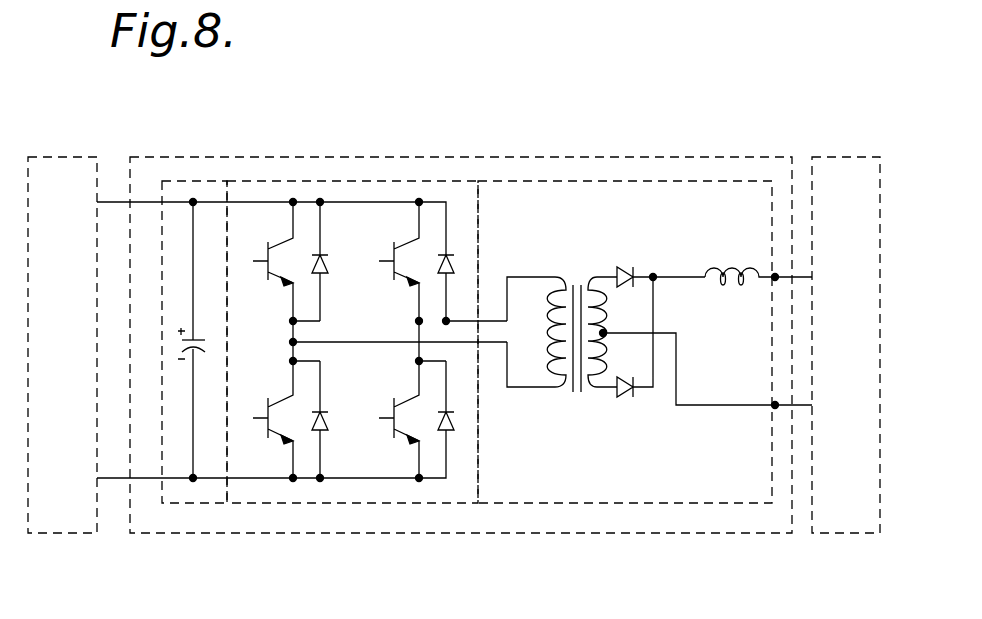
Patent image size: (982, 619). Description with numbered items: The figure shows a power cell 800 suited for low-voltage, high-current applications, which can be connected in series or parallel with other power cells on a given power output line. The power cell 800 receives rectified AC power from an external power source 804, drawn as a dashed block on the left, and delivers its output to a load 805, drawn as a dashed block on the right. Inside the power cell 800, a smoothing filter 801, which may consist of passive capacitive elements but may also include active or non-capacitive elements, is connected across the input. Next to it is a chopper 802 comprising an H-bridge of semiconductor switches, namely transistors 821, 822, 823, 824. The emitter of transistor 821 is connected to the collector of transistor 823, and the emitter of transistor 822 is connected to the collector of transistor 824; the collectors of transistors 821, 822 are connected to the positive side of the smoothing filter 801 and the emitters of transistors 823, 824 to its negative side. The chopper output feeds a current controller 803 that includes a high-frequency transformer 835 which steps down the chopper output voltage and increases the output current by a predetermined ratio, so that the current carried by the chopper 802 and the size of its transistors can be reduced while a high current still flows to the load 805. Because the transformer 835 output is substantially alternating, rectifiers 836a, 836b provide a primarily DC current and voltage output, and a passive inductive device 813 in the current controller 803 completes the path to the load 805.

The power cell 800 is at (253, 157).
The smoothing filter 801 is at (193, 181).
The chopper 802 is at (352, 330).
The current controller 803 is at (645, 305).
The external power source 804 is at (48, 533).
The load 805 is at (862, 533).
The passive inductive device 813 is at (736, 266).
The transistor 821 is at (293, 216).
The transistor 822 is at (419, 216).
The transistor 823 is at (270, 435).
The transistor 824 is at (407, 437).
The high-frequency transformer 835 is at (579, 394).
The rectifier 836a is at (632, 266).
The rectifier 836b is at (627, 398).